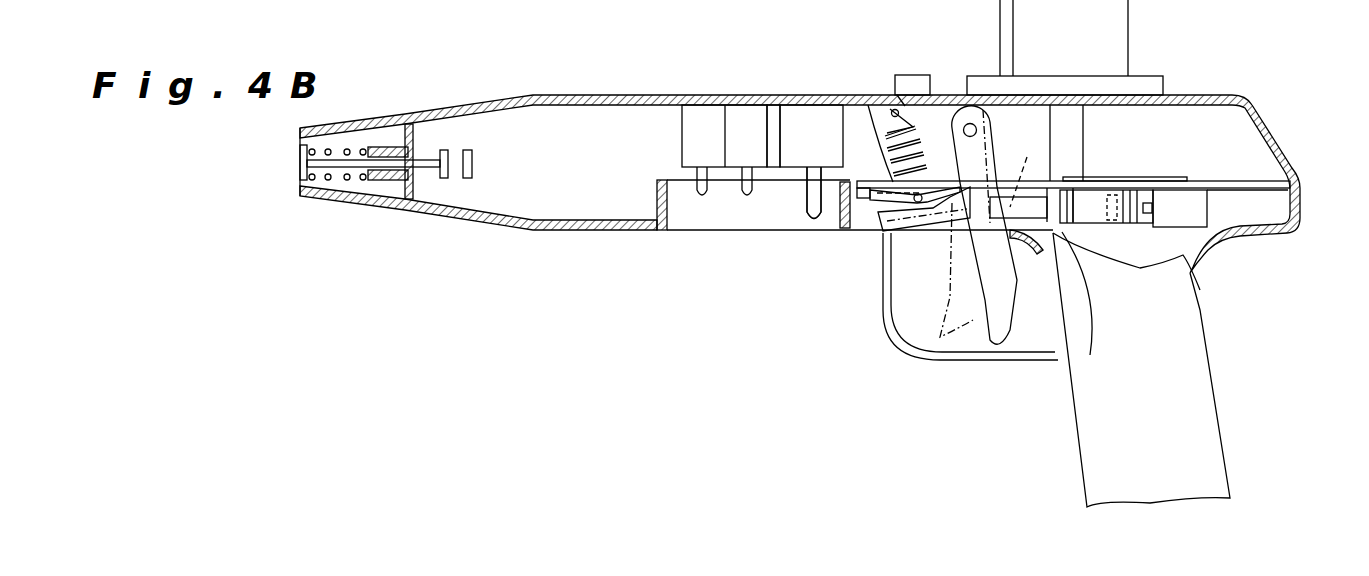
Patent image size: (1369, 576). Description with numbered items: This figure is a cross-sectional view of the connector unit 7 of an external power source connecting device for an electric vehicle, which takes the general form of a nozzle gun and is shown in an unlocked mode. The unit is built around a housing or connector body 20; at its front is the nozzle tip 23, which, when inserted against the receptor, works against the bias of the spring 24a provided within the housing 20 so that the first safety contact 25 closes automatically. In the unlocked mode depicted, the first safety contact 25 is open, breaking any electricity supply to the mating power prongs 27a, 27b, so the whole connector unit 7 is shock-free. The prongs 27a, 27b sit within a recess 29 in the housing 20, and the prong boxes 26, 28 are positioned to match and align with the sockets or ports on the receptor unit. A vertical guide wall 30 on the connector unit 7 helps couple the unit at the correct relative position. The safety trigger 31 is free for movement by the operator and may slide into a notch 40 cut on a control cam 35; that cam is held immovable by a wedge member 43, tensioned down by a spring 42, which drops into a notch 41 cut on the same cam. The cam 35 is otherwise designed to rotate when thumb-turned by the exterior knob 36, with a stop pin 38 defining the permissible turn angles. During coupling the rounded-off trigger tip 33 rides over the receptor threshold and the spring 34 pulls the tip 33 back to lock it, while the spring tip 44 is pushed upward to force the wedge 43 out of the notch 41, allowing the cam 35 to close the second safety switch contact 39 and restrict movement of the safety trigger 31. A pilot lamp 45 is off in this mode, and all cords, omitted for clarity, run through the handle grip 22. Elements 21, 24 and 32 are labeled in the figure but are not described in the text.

The connector unit 7 is at (432, 82).
The housing 20 is at (590, 222).
The upper housing 21 is at (1236, 98).
The handle grip 22 is at (1185, 454).
The nozzle tip 23 is at (442, 180).
The nozzle cap 24 is at (302, 163).
The spring 24a is at (347, 180).
The first safety contact 25 is at (468, 180).
The prong box 26 is at (805, 118).
The power prong 27a is at (815, 220).
The power prong 27b is at (814, 193).
The prong box 28 is at (716, 126).
The recess 29 is at (680, 218).
The vertical guide wall 30 is at (662, 200).
The safety trigger 31 is at (1000, 307).
The trigger pivot lever 32 is at (970, 123).
The trigger tip 33 is at (893, 235).
The spring 34 is at (890, 134).
The control cam 35 is at (1047, 222).
The exterior knob 36 is at (1105, 52).
The stop pin 38 is at (1190, 300).
The second safety switch contact 39 is at (1187, 210).
The notch 40 is at (1023, 165).
The notch 41 is at (1088, 311).
The spring 42 is at (1230, 190).
The wedge member 43 is at (1085, 197).
The spring tip 44 is at (897, 95).
The pilot lamp 45 is at (910, 80).